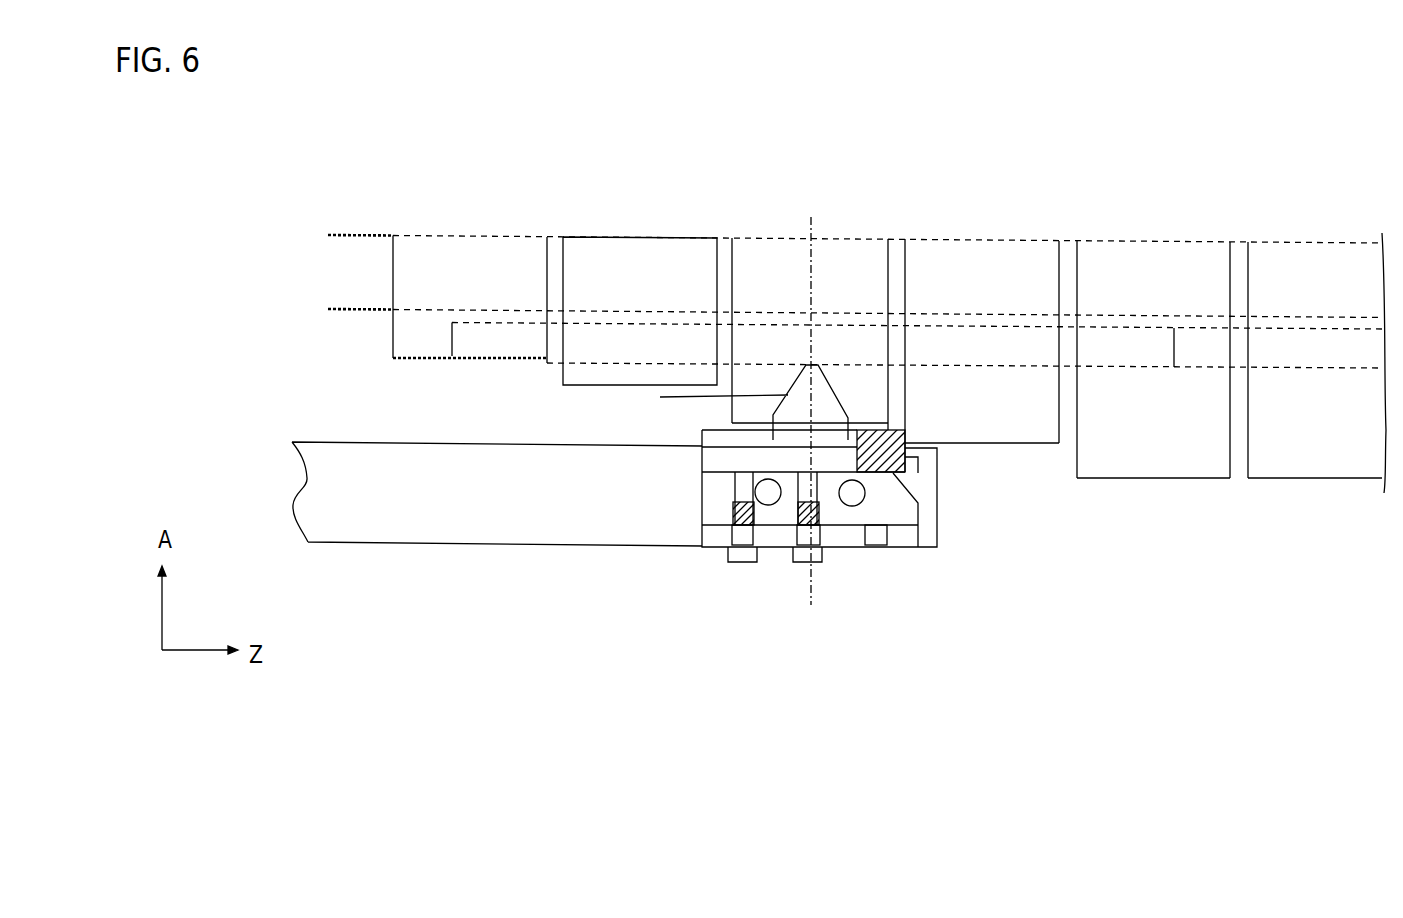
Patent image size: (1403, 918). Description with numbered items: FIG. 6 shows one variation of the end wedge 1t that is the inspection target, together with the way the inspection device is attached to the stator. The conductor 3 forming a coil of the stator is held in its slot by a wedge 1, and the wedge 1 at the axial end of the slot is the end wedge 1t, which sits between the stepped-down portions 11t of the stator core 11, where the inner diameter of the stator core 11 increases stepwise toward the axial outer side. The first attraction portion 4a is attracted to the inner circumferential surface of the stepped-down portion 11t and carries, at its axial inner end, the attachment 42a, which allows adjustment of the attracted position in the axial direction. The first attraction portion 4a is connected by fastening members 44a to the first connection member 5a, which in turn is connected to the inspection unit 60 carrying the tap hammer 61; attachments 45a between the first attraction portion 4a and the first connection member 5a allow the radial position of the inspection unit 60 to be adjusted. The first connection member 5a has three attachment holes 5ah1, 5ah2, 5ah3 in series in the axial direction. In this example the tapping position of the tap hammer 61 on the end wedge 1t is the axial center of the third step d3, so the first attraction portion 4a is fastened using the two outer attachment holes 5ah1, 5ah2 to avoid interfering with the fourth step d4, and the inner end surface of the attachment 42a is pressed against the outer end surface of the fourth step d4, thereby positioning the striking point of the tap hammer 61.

The wedge 1 is at (1205, 342).
The end wedge 1t is at (764, 338).
The conductor 3 is at (358, 260).
The stator core 11 is at (963, 192).
The stepped-down portion 11t is at (1038, 477).
The first attraction portion 4a is at (700, 463).
The first connection member 5a is at (850, 545).
The attachment hole 5ah1 is at (748, 545).
The attachment hole 5ah2 is at (813, 546).
The attachment hole 5ah3 is at (877, 545).
The attachment 42a is at (922, 548).
The fastening member 44a is at (738, 548).
The attachment 45a is at (735, 506).
The inspection unit 60 is at (922, 483).
The tap hammer 61 is at (660, 397).
The third step d3 is at (833, 411).
The fourth step d4 is at (982, 269).